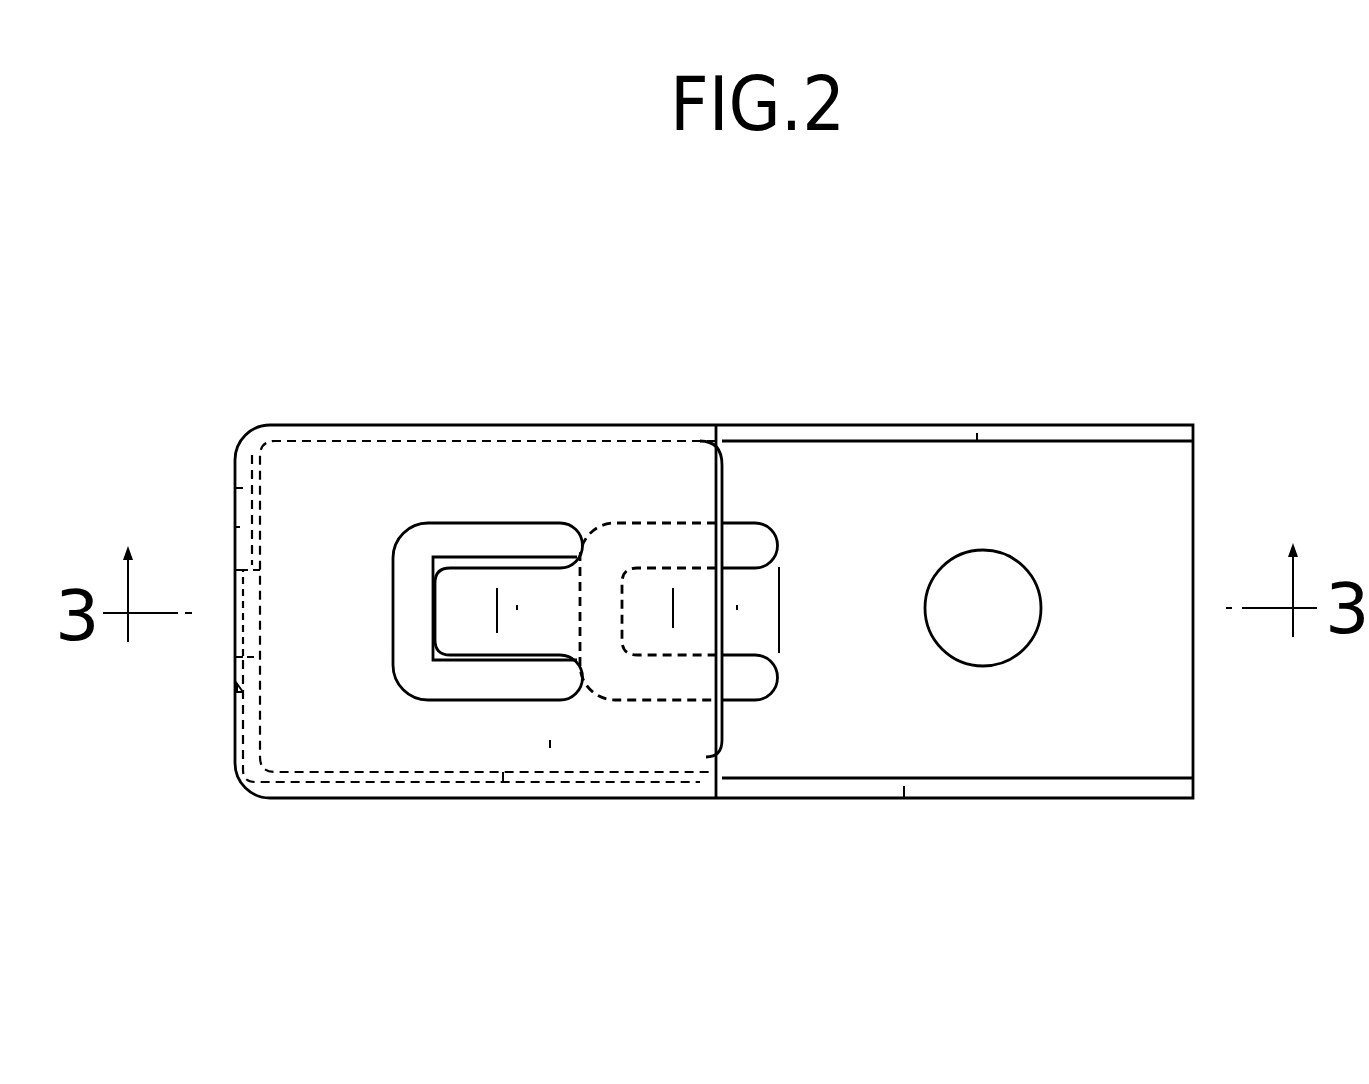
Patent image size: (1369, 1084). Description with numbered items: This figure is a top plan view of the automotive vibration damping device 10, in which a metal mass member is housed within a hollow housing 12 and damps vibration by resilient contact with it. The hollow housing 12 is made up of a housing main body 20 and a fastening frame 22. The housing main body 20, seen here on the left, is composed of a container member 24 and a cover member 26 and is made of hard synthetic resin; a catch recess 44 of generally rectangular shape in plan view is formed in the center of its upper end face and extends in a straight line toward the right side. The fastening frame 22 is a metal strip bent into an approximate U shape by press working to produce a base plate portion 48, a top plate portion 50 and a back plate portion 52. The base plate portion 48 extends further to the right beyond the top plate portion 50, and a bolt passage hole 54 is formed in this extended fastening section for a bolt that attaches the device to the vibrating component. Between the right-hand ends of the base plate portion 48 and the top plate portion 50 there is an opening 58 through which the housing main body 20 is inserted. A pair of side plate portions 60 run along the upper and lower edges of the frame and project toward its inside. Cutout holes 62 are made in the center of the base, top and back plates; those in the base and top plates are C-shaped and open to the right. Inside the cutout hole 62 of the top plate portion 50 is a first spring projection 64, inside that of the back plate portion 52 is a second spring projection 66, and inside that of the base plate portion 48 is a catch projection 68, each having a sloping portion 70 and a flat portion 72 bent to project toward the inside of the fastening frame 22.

The automotive vibration damping device 10 is at (198, 366).
The hollow housing 12 is at (246, 802).
The housing main body 20 is at (557, 860).
The fastening frame 22 is at (650, 828).
The container member 24 is at (550, 745).
The cover member 26 is at (511, 770).
The catch recess 44 is at (445, 627).
The base plate portion 48 is at (1080, 743).
The top plate portion 50 is at (300, 692).
The back plate portion 52 is at (235, 488).
The bolt passage hole 54 is at (1035, 618).
The opening 58 is at (757, 623).
The side plate portion 60 is at (977, 433).
The cutout hole 62 is at (235, 681).
The first spring projection 64 is at (553, 360).
The second spring projection 66 is at (232, 578).
The catch projection 68 is at (748, 345).
The sloping portion 70 is at (517, 605).
The flat portion 72 is at (480, 595).